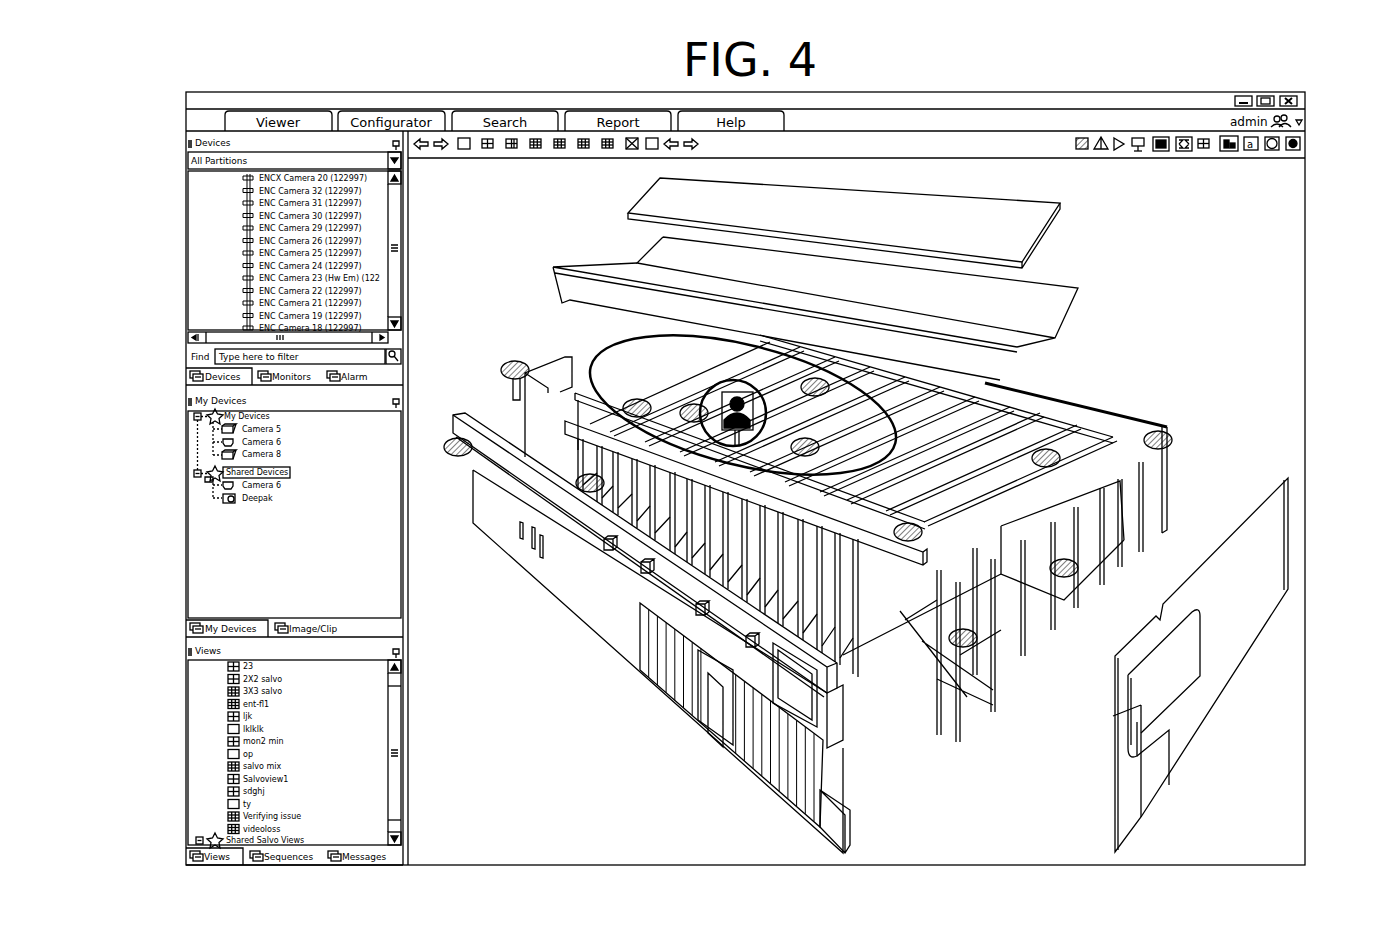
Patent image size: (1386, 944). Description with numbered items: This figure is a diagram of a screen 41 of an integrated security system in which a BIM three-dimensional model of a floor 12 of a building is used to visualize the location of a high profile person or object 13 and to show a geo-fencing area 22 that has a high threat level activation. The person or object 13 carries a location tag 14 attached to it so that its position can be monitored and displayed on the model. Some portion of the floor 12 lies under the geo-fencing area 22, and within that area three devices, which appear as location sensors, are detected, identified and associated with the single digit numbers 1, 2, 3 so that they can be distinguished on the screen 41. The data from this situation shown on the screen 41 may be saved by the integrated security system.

The screen 41 is at (1242, 81).
The geo-fencing area 22 is at (596, 352).
The location tag 14 is at (712, 391).
The high profile person or object 13 is at (753, 370).
The single digit number 1 is at (627, 387).
The single digit number 2 is at (790, 362).
The single digit number 3 is at (810, 443).
The floor 12 is at (1068, 400).